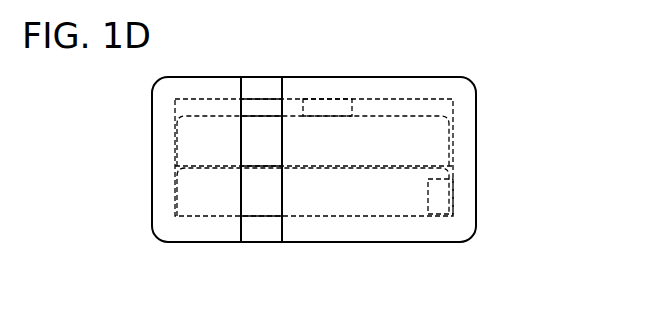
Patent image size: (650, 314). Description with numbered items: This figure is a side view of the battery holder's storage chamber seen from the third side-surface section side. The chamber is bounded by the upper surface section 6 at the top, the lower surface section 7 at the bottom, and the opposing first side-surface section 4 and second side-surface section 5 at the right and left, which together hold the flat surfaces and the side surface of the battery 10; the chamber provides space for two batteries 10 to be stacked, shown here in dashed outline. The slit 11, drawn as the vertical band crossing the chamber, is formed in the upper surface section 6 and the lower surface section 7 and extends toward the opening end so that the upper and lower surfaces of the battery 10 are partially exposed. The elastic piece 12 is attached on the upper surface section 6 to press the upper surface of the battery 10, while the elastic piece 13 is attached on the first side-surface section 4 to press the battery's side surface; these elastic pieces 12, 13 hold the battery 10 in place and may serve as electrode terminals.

The first side-surface section 4 is at (478, 149).
The second side-surface section 5 is at (151, 150).
The upper surface section 6 is at (392, 76).
The lower surface section 7 is at (363, 243).
The battery 10 is at (202, 127).
The slit 11 is at (242, 190).
The elastic piece 12 is at (331, 108).
The elastic piece 13 is at (437, 195).